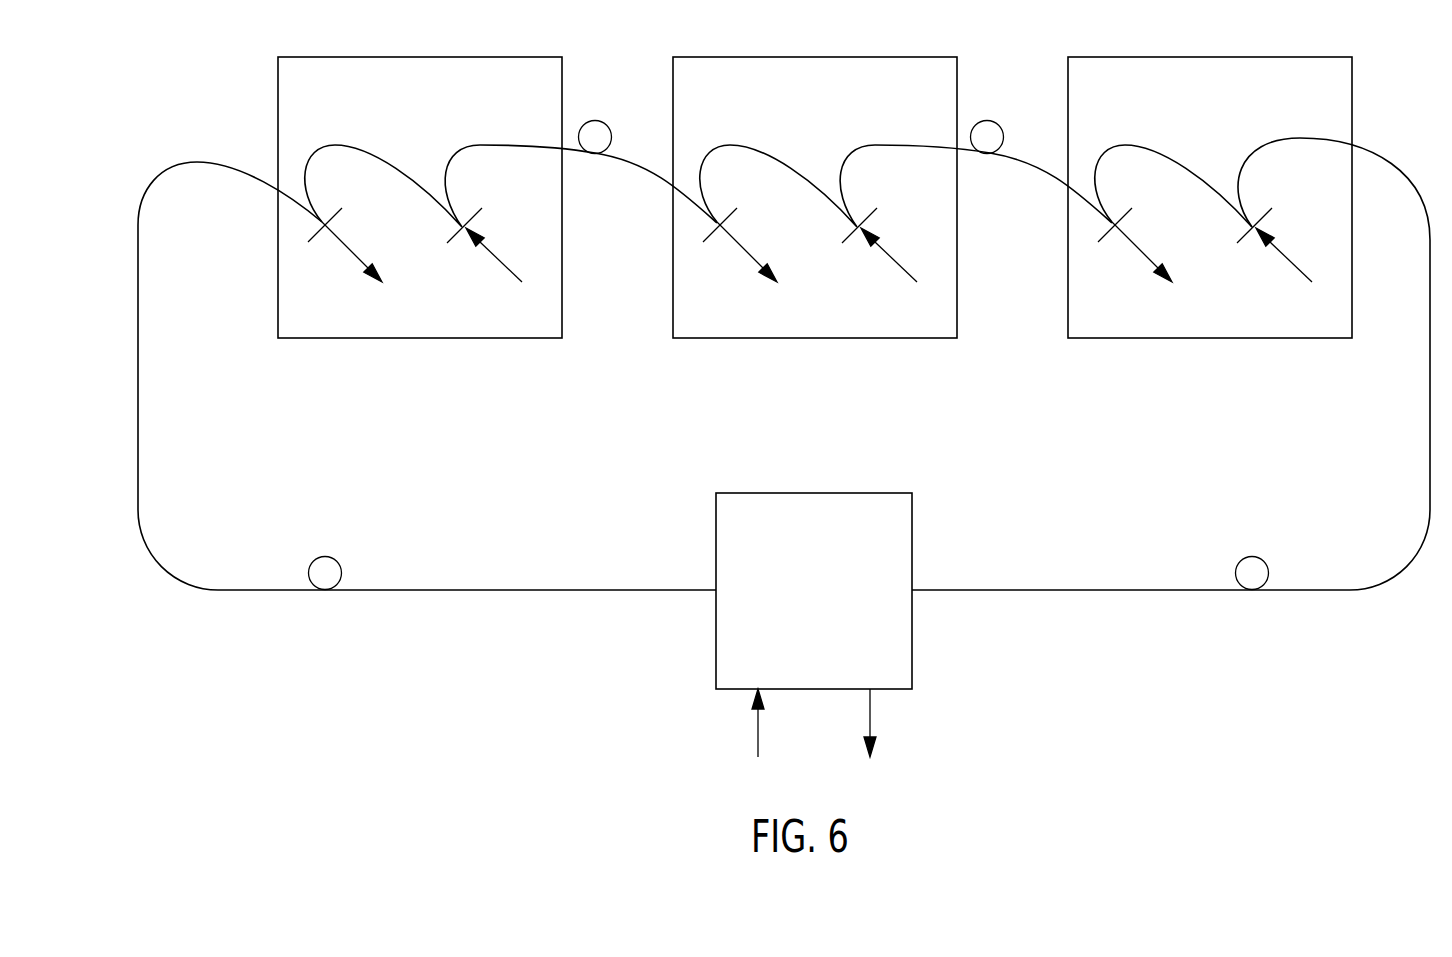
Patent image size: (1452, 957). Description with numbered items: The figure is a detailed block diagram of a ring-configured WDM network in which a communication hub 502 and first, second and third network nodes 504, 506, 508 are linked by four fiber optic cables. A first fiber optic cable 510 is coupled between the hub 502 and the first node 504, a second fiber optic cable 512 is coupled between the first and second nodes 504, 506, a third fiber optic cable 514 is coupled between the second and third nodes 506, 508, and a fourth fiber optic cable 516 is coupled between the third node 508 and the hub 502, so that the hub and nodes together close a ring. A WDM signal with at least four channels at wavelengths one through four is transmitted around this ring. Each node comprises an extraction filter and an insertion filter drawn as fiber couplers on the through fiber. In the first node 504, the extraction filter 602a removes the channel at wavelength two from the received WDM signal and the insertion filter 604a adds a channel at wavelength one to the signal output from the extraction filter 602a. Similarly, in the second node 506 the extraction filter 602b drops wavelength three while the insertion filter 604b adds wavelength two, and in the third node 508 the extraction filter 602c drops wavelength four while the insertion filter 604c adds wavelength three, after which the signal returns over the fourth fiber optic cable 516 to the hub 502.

The communication hub 502 is at (716, 655).
The first network node 504 is at (420, 217).
The second network node 506 is at (815, 217).
The third network node 508 is at (1210, 217).
The first fiber optic cable 510 is at (170, 573).
The second fiber optic cable 512 is at (595, 154).
The third fiber optic cable 514 is at (987, 154).
The fourth fiber optic cable 516 is at (1397, 578).
The extraction filter 602a is at (335, 215).
The insertion filter 604a is at (475, 215).
The extraction filter 602b is at (756, 230).
The insertion filter 604b is at (896, 230).
The extraction filter 602c is at (1151, 230).
The insertion filter 604c is at (1291, 230).